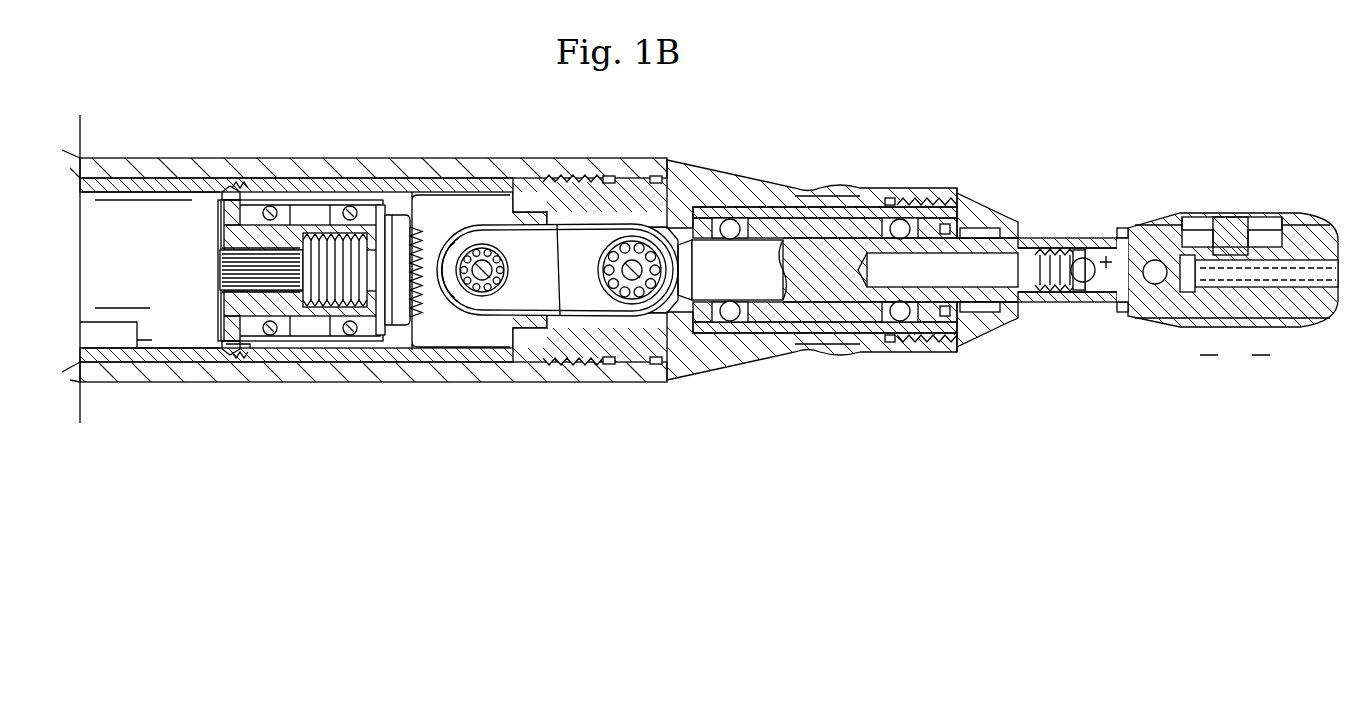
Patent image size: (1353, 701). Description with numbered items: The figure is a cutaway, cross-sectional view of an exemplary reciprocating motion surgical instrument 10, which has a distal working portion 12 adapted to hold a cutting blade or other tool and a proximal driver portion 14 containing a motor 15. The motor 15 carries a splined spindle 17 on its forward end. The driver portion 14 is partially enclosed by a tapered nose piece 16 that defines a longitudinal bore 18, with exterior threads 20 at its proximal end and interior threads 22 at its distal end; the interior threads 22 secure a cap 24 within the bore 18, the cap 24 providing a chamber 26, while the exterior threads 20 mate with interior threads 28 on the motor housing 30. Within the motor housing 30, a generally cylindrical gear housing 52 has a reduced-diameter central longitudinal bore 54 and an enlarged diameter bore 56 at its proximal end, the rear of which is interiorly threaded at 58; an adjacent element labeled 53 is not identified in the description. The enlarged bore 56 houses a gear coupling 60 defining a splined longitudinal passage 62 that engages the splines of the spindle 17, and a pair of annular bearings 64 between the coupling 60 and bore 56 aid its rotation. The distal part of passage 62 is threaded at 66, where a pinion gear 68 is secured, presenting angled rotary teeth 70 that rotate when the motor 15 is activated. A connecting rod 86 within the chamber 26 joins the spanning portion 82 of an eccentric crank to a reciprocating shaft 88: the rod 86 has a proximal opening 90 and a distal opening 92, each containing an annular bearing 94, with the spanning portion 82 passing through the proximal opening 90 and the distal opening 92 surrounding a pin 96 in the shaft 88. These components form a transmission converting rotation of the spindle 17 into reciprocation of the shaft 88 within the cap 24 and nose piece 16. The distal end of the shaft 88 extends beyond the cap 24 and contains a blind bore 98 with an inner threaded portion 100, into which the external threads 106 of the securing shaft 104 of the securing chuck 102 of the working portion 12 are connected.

The reciprocating motion surgical instrument 10 is at (875, 117).
The distal working portion 12 is at (1187, 165).
The proximal driver portion 14 is at (293, 142).
The motor 15 is at (104, 285).
The tapered nose piece 16 is at (716, 172).
The splined spindle 17 is at (220, 258).
The longitudinal bore 18 is at (770, 207).
The exterior threads 20 is at (600, 180).
The interior threads 22 is at (918, 198).
The cap 24 is at (985, 212).
The chamber 26 is at (808, 193).
The interior threads 28 is at (560, 176).
The motor housing 30 is at (478, 160).
The gear housing 52 is at (250, 178).
The retainer 53 is at (217, 198).
The central longitudinal bore 54 is at (402, 225).
The enlarged diameter longitudinal bore 56 is at (362, 200).
The interior threads 58 is at (240, 352).
The gear coupling 60 is at (222, 312).
The splined longitudinal passage 62 is at (288, 283).
The annular bearings 64 is at (270, 206).
The threaded portion 66 is at (322, 302).
The pinion gear 68 is at (416, 320).
The angled rotary teeth 70 is at (430, 300).
The spanning portion 82 is at (482, 288).
The connecting rod 86 is at (536, 298).
The reciprocating shaft 88 is at (725, 283).
The proximal opening 90 is at (478, 242).
The distal opening 92 is at (634, 240).
The annular bearings 94 is at (510, 274).
The pin 96 is at (672, 258).
The blind bore 98 is at (985, 266).
The inner threaded portion 100 is at (1083, 260).
The securing chuck 102 is at (1250, 210).
The securing shaft 104 is at (1102, 292).
The external threads 106 is at (1044, 254).